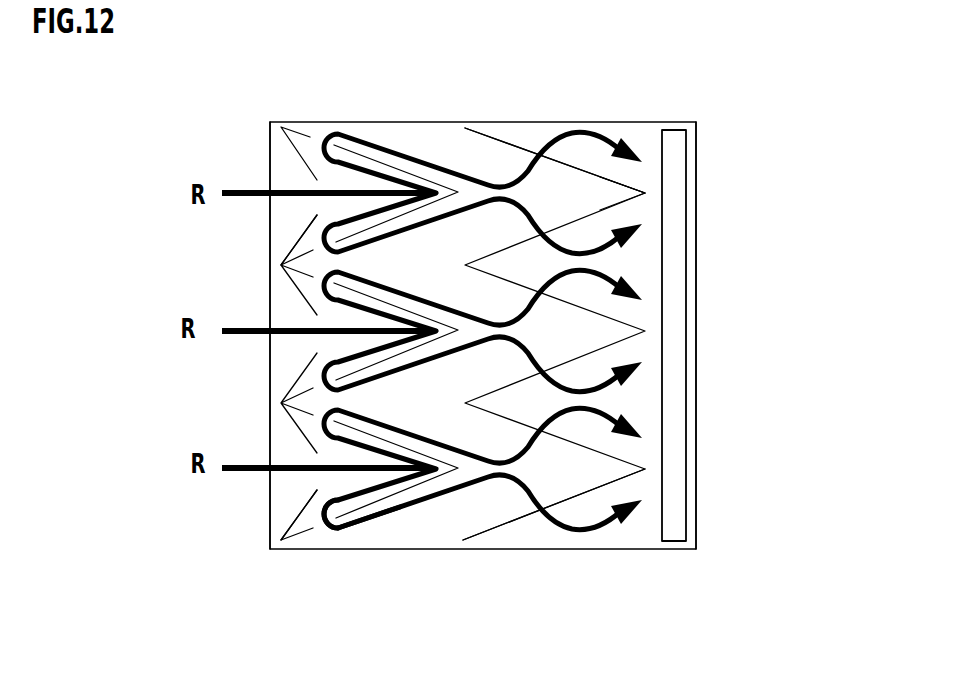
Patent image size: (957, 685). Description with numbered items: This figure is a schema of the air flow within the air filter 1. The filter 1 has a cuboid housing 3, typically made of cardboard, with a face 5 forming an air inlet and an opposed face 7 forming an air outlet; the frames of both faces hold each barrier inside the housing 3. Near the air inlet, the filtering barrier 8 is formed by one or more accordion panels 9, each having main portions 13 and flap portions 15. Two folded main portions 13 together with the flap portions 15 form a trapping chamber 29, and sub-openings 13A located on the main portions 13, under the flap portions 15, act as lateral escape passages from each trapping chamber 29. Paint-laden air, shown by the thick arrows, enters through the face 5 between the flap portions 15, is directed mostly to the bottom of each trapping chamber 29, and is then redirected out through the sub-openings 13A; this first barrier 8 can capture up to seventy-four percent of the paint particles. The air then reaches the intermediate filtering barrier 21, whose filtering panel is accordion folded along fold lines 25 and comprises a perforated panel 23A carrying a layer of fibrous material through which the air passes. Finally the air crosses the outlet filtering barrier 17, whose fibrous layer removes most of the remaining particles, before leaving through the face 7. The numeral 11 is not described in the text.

The air filter 1 is at (686, 62).
The housing 3 is at (465, 127).
The face forming an air inlet 5 is at (270, 155).
The face forming an air outlet 7 is at (702, 184).
The filtering barrier 8 is at (362, 530).
The accordion panel 9 is at (298, 122).
The lower guide portion 11 is at (283, 541).
The main portion 13 is at (383, 160).
The sub-opening 13A is at (317, 527).
The flap portion 15 is at (298, 238).
The outlet filtering barrier 17 is at (690, 320).
The intermediate filtering barrier 21 is at (514, 535).
The perforated panel 23A is at (522, 148).
The fold line 25 is at (645, 192).
The trapping chamber 29 is at (350, 182).